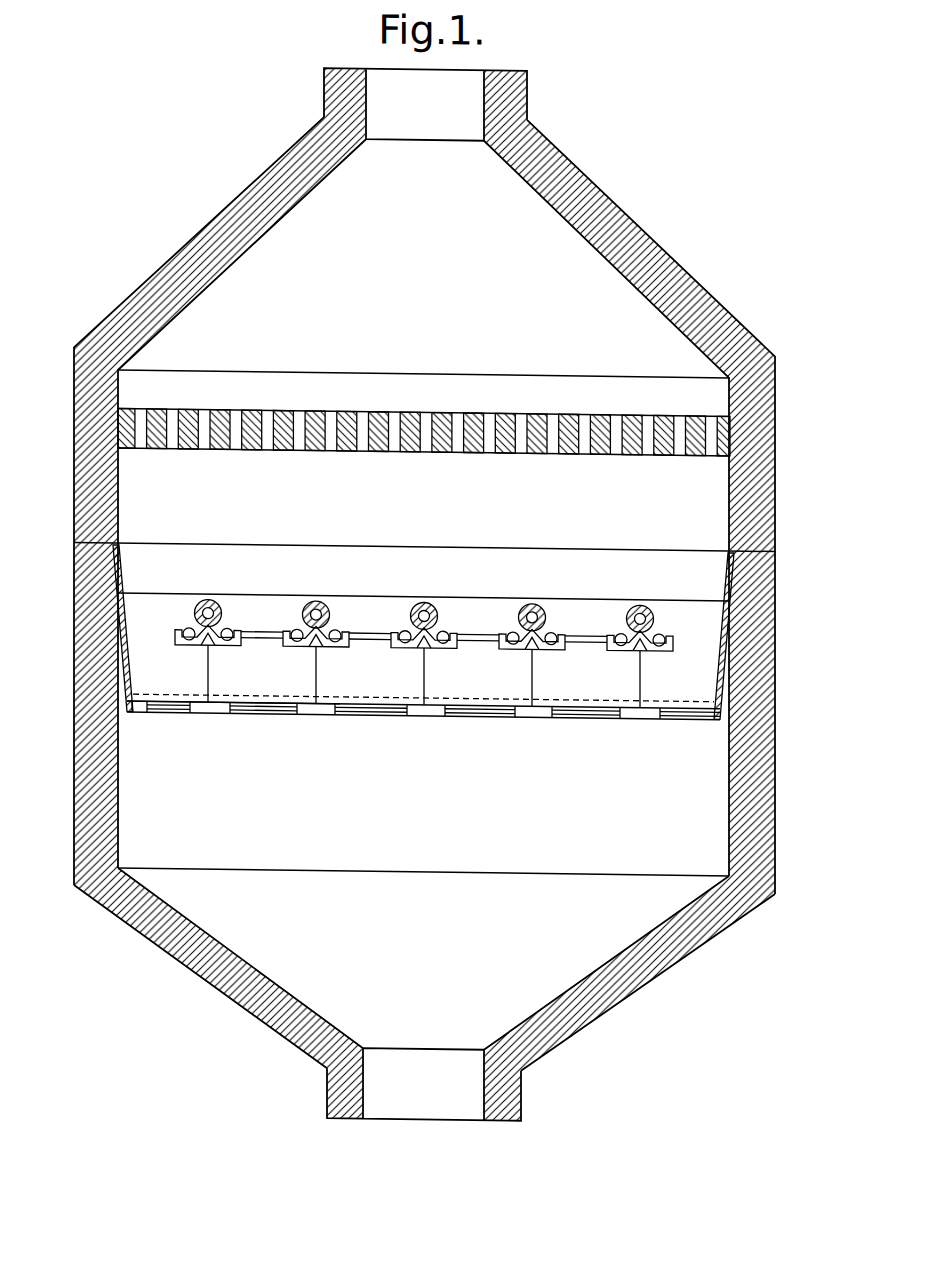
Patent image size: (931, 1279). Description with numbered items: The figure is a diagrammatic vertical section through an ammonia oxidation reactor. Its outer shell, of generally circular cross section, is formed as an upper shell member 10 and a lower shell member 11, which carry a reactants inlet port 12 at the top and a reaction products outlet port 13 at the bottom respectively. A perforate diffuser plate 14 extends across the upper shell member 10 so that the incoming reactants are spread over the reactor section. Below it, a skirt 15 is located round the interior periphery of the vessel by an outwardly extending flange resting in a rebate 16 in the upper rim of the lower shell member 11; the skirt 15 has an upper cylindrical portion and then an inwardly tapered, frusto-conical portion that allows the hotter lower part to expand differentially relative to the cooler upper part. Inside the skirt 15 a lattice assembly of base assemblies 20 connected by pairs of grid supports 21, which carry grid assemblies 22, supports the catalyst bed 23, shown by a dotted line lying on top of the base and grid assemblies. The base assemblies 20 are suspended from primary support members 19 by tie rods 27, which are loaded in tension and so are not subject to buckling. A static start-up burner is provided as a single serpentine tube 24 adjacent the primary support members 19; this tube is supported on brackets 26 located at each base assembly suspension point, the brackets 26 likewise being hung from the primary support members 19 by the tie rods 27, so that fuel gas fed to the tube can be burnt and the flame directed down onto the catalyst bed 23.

The upper shell member 10 is at (200, 245).
The lower shell member 11 is at (172, 944).
The reactants inlet port 12 is at (380, 110).
The reaction products outlet port 13 is at (345, 1095).
The perforate diffuser plate 14 is at (316, 407).
The skirt 15 is at (272, 541).
The rebate 16 is at (104, 562).
The primary support member 19 is at (320, 594).
The base assembly 20 is at (423, 718).
The grid support 21 is at (598, 721).
The grid assembly 22 is at (493, 717).
The catalyst bed 23 is at (268, 720).
The serpentine tube 24 is at (496, 625).
The bracket 26 is at (672, 639).
The tie rod 27 is at (643, 688).